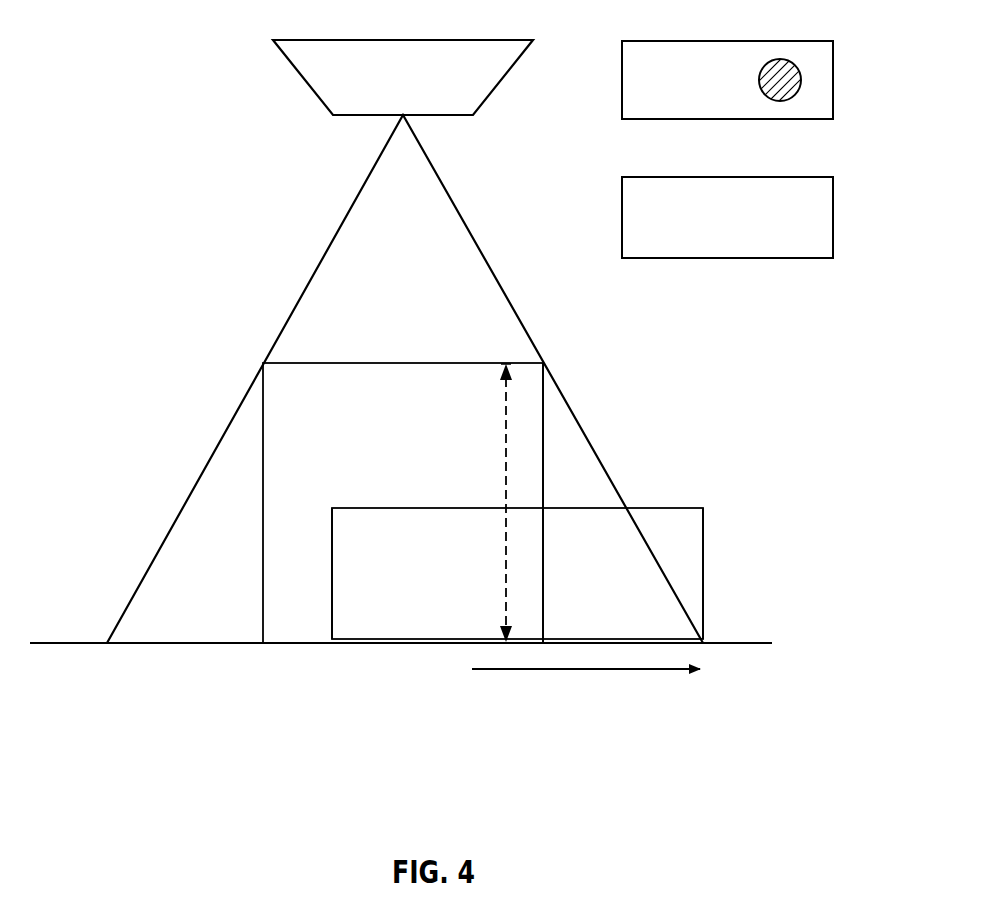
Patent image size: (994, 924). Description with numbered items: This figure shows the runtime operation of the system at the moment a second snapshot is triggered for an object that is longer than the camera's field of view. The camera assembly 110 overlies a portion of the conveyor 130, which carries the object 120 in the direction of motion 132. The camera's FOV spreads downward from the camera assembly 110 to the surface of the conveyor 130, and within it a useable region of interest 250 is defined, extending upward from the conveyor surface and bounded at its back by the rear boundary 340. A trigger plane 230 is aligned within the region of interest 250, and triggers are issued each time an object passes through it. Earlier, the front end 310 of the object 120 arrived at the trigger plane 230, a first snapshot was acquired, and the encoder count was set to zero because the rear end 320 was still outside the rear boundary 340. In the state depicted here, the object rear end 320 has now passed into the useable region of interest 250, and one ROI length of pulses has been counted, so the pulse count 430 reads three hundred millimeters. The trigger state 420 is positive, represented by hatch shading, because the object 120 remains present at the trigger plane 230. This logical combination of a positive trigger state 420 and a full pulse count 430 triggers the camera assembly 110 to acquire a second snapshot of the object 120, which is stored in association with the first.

The camera assembly 110 is at (457, 48).
The object 120 is at (710, 590).
The conveyor 130 is at (737, 645).
The direction of motion 132 is at (587, 670).
The trigger plane 230 is at (506, 484).
The region of interest 250 is at (553, 427).
The front end 310 is at (703, 533).
The rear end 320 is at (332, 583).
The rear boundary 340 is at (263, 450).
The trigger state 420 is at (766, 40).
The pulse count 430 is at (766, 176).
The field of view FOV is at (542, 328).